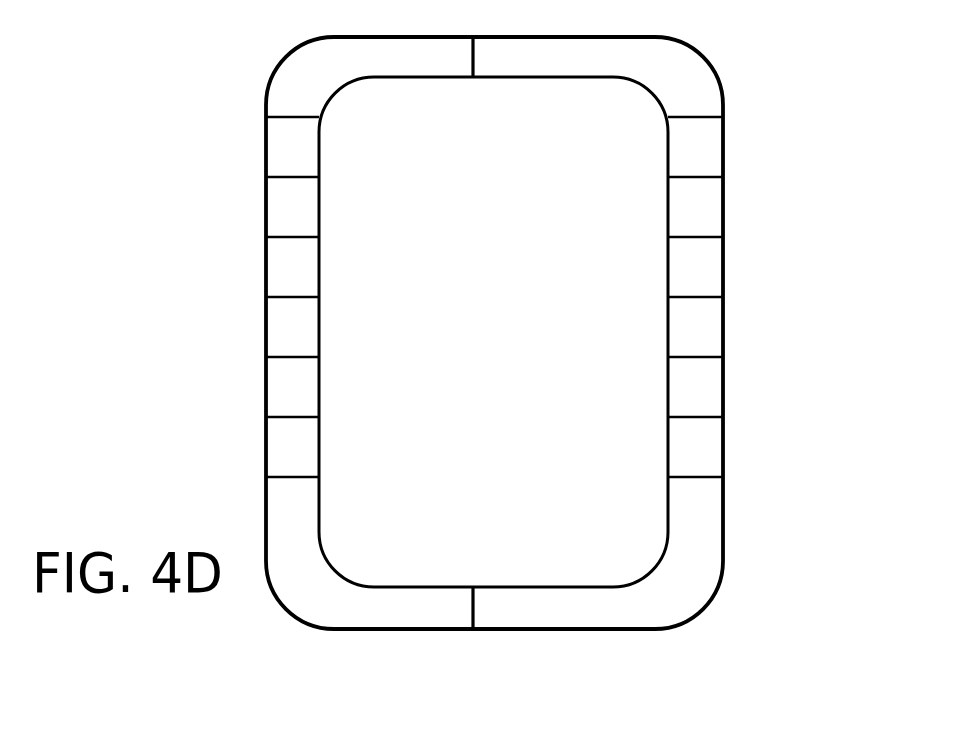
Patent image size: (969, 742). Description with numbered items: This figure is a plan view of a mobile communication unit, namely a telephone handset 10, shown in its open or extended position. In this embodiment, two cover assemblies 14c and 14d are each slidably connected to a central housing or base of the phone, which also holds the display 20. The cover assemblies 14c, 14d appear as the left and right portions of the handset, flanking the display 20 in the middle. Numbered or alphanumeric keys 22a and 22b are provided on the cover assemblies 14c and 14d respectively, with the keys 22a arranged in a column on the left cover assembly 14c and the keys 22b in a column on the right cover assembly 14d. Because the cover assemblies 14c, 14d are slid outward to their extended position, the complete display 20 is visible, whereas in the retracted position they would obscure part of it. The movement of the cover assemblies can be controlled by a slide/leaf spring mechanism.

The telephone handset 10 is at (212, 57).
The display 20 is at (524, 343).
The numbered or alphanumeric keys 22a is at (282, 150).
The numbered or alphanumeric keys 22b is at (716, 440).
The cover assembly 14c is at (285, 508).
The cover assembly 14d is at (710, 517).